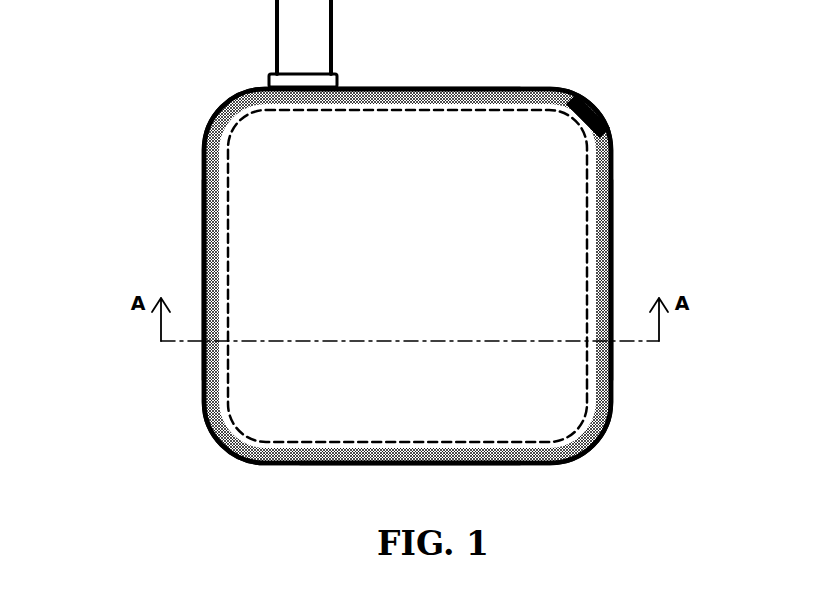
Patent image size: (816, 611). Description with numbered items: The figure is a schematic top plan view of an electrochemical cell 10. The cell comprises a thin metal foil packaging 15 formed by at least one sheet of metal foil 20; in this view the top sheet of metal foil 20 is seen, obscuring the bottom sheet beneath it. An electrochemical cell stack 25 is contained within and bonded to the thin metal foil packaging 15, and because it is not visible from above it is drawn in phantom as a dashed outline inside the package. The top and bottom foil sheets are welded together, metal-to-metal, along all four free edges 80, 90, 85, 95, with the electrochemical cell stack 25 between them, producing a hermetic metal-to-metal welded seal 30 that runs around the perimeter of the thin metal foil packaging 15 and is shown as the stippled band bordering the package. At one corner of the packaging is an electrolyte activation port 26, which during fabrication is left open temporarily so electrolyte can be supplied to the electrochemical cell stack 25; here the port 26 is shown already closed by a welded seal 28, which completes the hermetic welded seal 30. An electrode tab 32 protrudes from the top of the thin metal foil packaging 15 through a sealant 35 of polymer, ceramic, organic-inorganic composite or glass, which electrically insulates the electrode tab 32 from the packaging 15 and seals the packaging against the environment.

The electrochemical cell 10 is at (144, 243).
The thin metal foil packaging 15 is at (520, 138).
The sheet of metal foil 20 is at (399, 279).
The electrochemical cell stack 25 is at (300, 440).
The electrolyte activation port 26 is at (612, 143).
The welded seal 28 is at (590, 102).
The hermetic metal-to-metal welded seal 30 is at (613, 238).
The electrode tab 32 is at (333, 43).
The sealant 35 is at (269, 78).
The free edge 80 is at (202, 393).
The free edge 85 is at (615, 388).
The free edge 90 is at (527, 466).
The free edge 95 is at (462, 85).